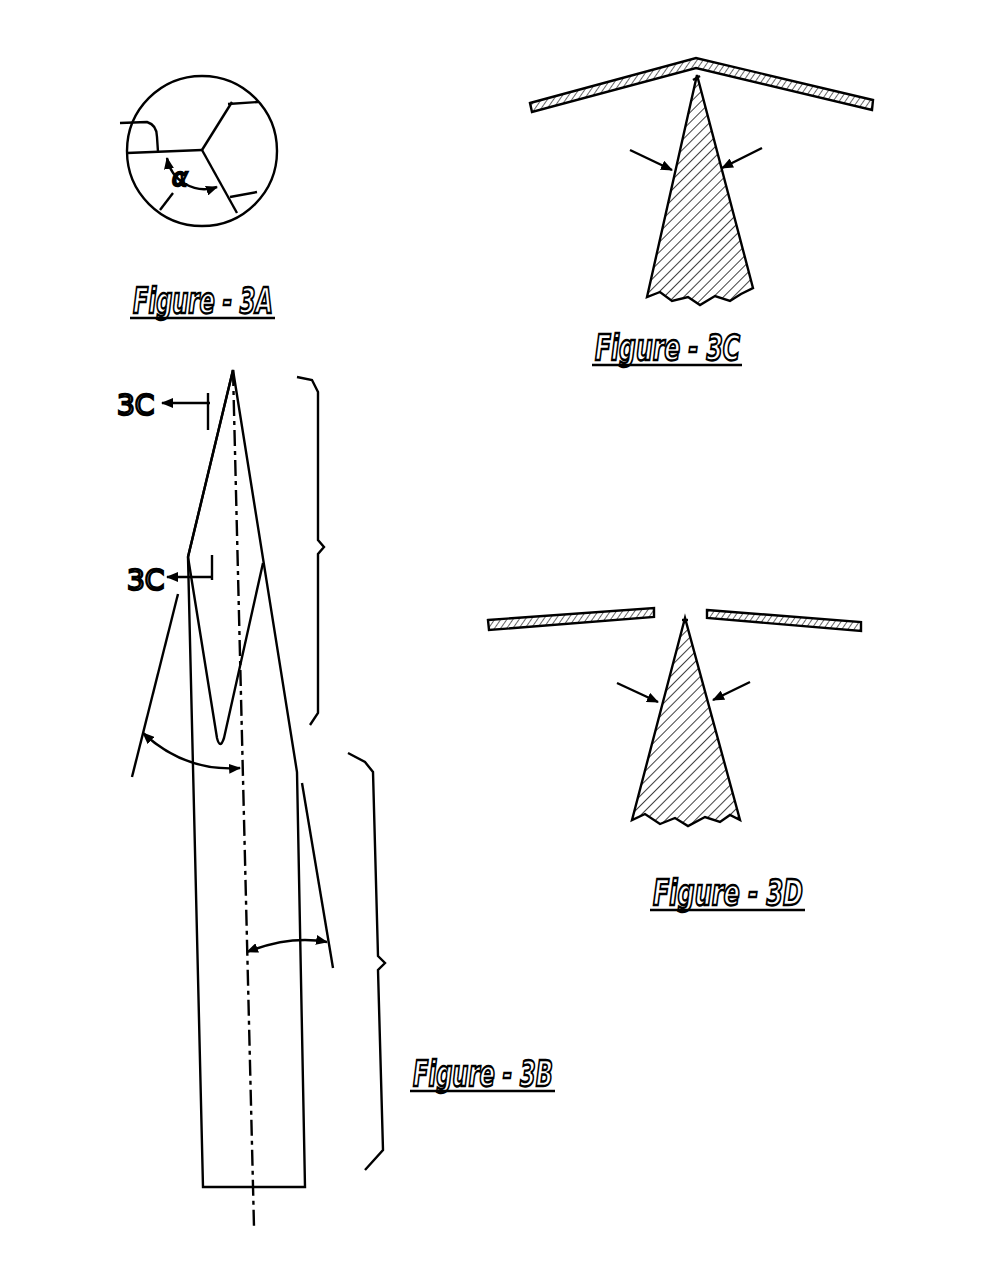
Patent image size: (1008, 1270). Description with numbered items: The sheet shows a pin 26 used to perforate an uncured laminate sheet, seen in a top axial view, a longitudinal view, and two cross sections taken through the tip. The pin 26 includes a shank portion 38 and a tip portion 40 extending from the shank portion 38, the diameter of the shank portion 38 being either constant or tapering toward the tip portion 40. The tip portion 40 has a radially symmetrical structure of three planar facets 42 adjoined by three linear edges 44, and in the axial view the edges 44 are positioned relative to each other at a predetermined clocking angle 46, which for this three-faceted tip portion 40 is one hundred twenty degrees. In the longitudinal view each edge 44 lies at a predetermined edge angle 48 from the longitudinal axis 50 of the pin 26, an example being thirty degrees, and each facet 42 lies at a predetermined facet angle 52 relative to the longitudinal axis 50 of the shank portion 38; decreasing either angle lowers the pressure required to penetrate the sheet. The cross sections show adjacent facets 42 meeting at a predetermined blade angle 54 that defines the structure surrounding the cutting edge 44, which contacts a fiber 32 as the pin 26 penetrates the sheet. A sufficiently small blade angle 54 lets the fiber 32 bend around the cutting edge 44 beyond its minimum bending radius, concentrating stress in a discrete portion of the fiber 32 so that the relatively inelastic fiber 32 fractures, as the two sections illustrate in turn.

In FIG. 3A, the pin 26 is at (327, 81).
In FIG. 3B, the pin 26 is at (178, 900).
In FIG. 3C, the fiber 32 is at (582, 83).
In FIG. 3D, the fiber 32 is at (595, 610).
In FIG. 3B, the shank portion 38 is at (393, 961).
In FIG. 3B, the tip portion 40 is at (335, 551).
In FIG. 3A, the facet 42 is at (192, 103).
In FIG. 3C, the facet 42 is at (742, 222).
In FIG. 3D, the facet 42 is at (643, 760).
In FIG. 3B, the facet 42 is at (207, 528).
In FIG. 3A, the edge 44 is at (258, 102).
In FIG. 3C, the edge 44 is at (694, 80).
In FIG. 3D, the edge 44 is at (685, 618).
In FIG. 3B, the edge 44 is at (245, 438).
In FIG. 3A, the clocking angle 46 is at (160, 210).
In FIG. 3B, the edge angle 48 is at (130, 732).
In FIG. 3B, the longitudinal axis 50 is at (253, 1217).
In FIG. 3B, the facet angle 52 is at (350, 950).
In FIG. 3C, the blade angle 54 is at (777, 140).
In FIG. 3D, the blade angle 54 is at (763, 673).